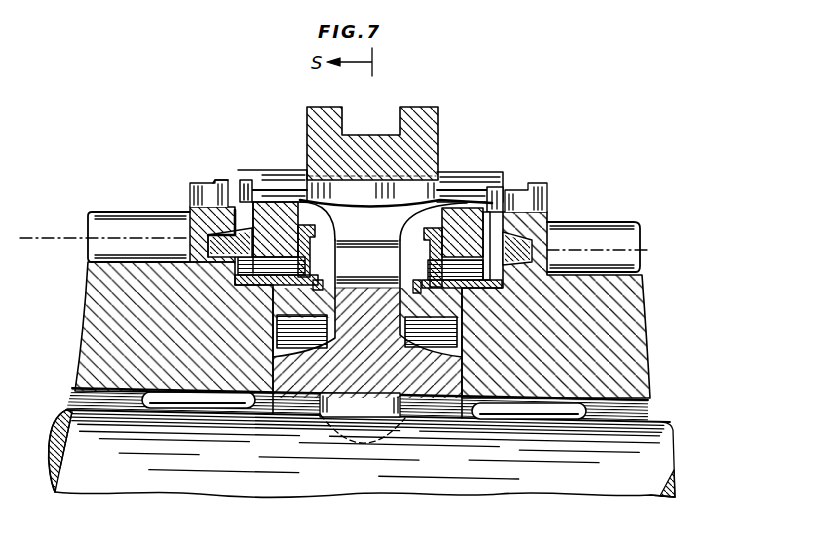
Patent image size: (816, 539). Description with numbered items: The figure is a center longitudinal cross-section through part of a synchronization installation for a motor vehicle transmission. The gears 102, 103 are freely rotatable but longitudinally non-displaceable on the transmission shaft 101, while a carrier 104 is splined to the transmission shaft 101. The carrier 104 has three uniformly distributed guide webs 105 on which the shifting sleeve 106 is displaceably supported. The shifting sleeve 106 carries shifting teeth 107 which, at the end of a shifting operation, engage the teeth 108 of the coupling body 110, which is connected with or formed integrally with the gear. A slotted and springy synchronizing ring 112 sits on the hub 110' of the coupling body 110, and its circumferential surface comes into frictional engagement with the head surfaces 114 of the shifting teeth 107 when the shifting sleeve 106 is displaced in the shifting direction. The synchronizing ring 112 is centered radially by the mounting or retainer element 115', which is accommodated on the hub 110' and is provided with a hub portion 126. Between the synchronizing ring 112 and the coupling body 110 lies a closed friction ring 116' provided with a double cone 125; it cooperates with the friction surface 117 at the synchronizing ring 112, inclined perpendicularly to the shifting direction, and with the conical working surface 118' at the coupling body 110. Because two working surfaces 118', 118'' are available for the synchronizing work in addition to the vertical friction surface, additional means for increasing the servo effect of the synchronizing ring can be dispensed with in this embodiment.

The transmission shaft 101 is at (228, 480).
The gear 102 is at (96, 312).
The gear 103 is at (630, 326).
The carrier 104 is at (322, 402).
The guide web 105 is at (292, 180).
The shifting sleeve 106 is at (366, 145).
The shifting teeth 107 is at (358, 197).
The teeth 108 is at (207, 183).
The coupling body 110 is at (399, 223).
The hub 110' is at (461, 265).
The synchronizing ring 112 is at (248, 180).
The head surfaces 114 is at (410, 196).
The mounting or retainer element 115' is at (367, 329).
The friction ring 116' is at (215, 169).
The friction surface 117 is at (279, 246).
The conical working surface 118' is at (117, 237).
The working surface 118'' is at (207, 259).
The double cone 125 is at (208, 254).
The hub portion 126 is at (275, 292).